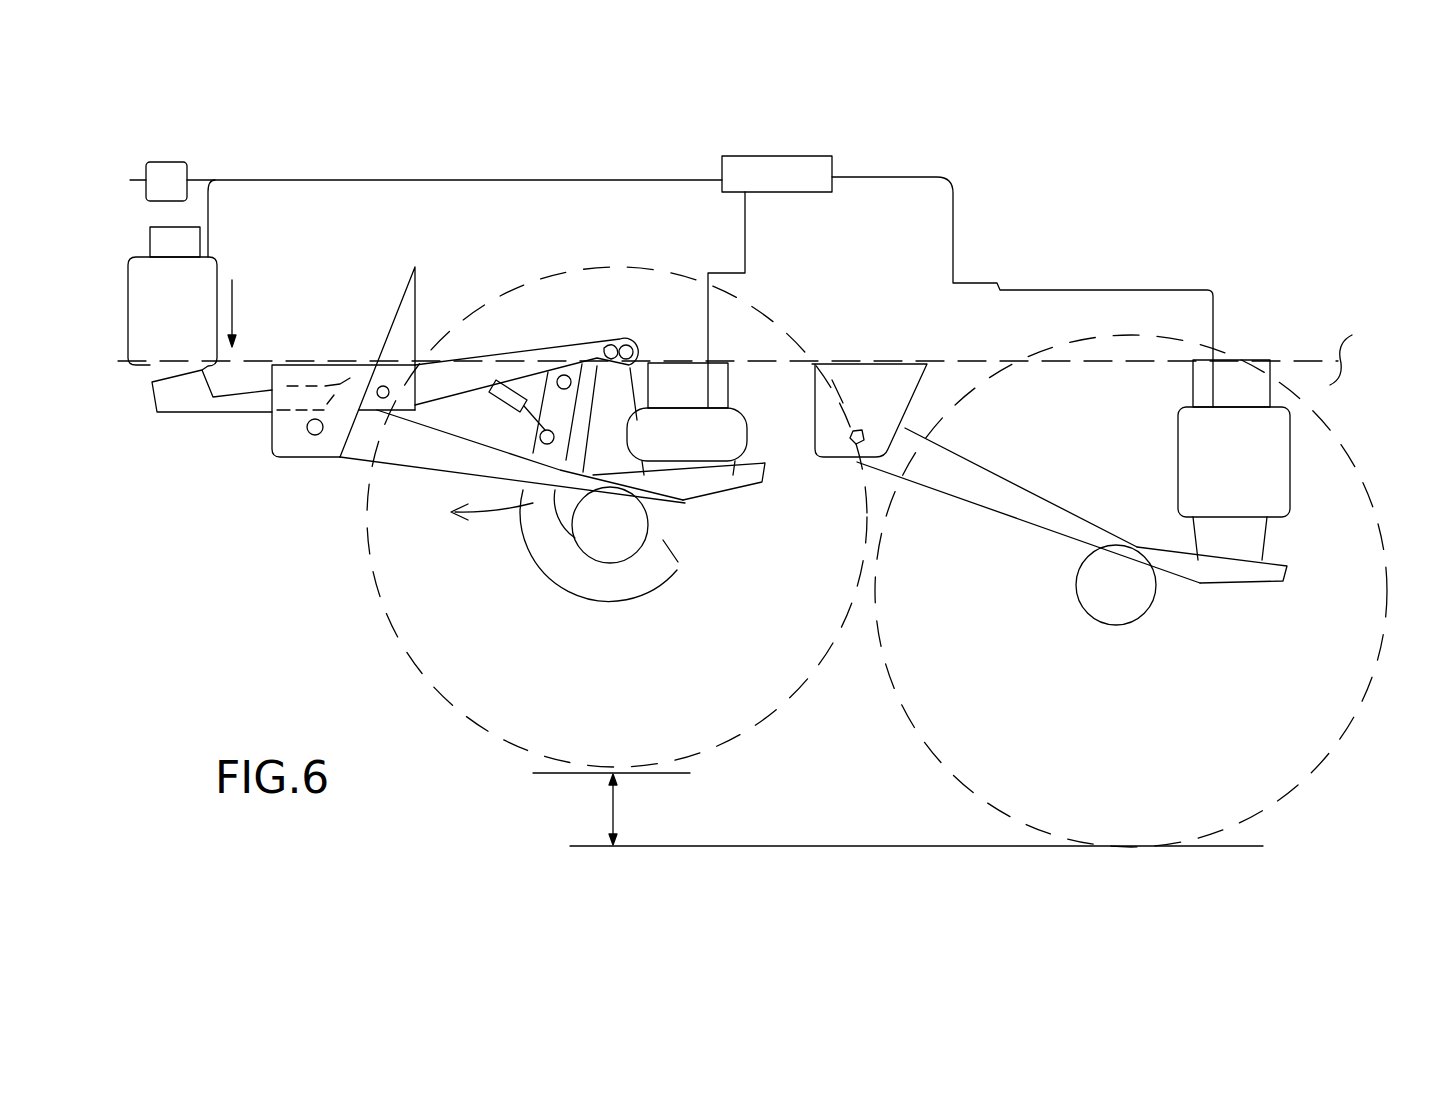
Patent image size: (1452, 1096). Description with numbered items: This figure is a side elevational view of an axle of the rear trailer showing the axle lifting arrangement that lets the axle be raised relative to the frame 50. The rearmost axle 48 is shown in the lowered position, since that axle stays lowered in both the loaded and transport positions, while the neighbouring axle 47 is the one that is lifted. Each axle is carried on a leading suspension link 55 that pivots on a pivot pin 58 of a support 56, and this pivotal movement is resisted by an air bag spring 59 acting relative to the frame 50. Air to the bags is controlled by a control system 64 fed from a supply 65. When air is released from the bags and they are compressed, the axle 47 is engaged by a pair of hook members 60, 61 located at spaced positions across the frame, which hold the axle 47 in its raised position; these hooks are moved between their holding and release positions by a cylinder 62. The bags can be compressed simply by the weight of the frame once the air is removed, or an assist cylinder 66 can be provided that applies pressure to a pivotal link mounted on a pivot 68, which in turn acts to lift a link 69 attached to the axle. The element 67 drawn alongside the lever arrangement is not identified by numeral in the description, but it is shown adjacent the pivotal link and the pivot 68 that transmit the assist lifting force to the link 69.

The axle 47 is at (608, 533).
The rearmost axle 48 is at (1108, 588).
The frame 50 is at (1030, 347).
The leading suspension link 55 is at (510, 486).
The support 56 is at (282, 431).
The pivot pin 58 is at (317, 440).
The air bag spring 59 is at (677, 443).
The hook member 60 is at (607, 585).
The hook member 61 is at (631, 598).
The cylinder 62 is at (518, 383).
The control system 64 is at (798, 167).
The supply 65 is at (182, 174).
The assist cylinder 66 is at (152, 330).
The lever arm 67 is at (468, 373).
The pivot 68 is at (375, 390).
The link 69 is at (612, 390).